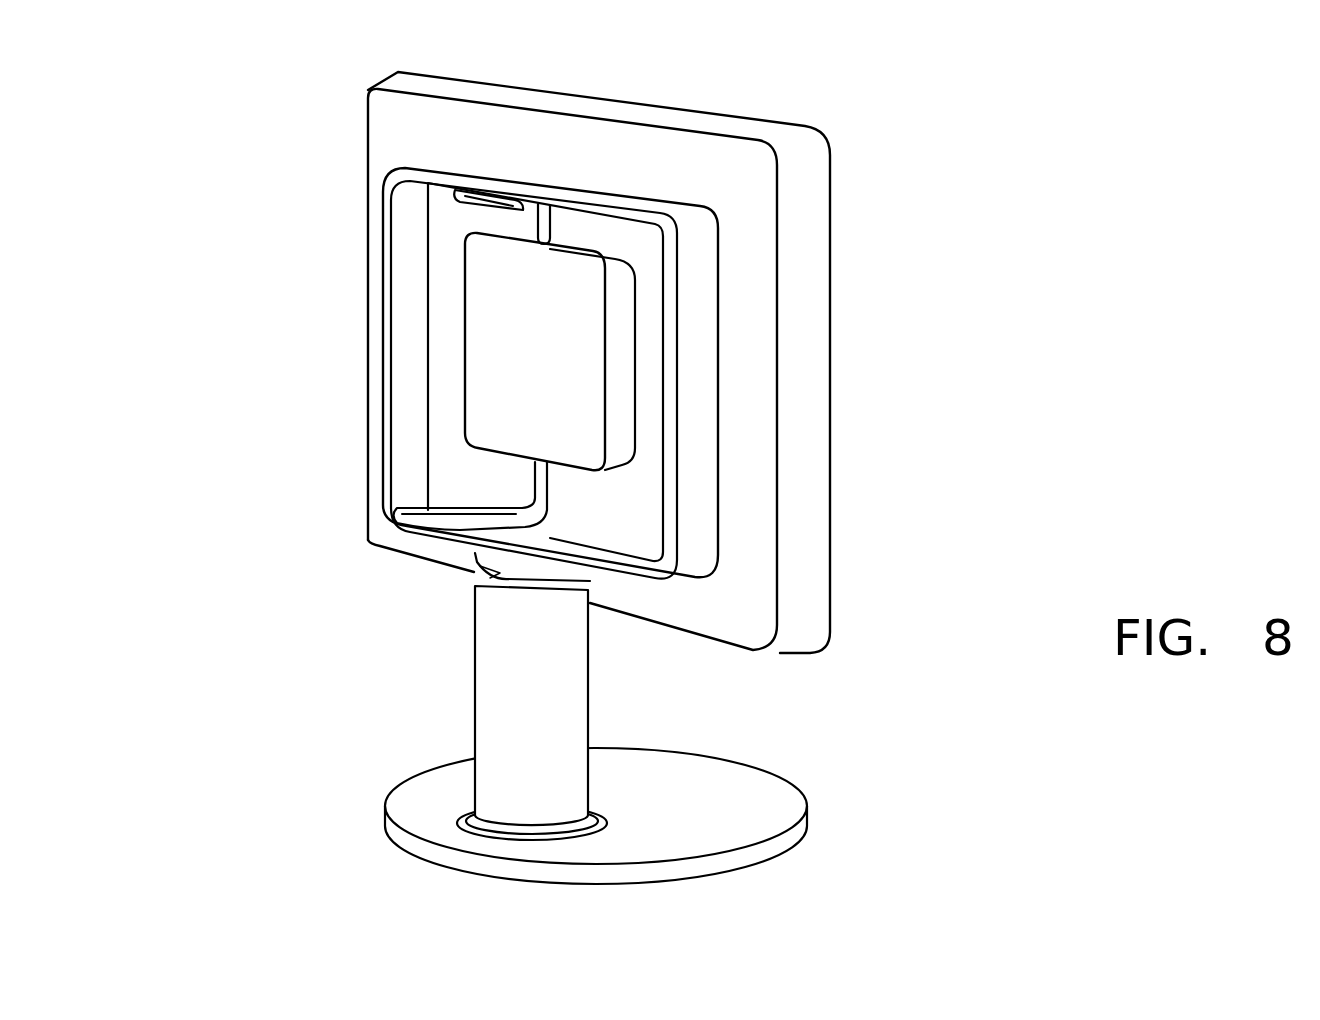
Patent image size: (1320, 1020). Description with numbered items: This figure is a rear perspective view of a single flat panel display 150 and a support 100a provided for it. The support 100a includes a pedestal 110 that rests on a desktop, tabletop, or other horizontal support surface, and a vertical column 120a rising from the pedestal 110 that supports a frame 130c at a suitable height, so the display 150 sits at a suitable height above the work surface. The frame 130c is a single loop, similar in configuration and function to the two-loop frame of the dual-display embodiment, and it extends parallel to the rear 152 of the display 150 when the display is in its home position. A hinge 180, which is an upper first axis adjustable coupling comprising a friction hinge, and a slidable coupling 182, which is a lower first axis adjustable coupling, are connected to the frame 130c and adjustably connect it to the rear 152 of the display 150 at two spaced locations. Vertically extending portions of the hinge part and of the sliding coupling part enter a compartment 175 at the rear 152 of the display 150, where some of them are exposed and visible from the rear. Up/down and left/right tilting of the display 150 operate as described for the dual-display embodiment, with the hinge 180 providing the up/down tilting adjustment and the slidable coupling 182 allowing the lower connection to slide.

The support 100a is at (511, 467).
The pedestal 110 is at (800, 808).
The vertical column 120a is at (568, 710).
The frame 130c is at (742, 265).
The flat panel display 150 is at (830, 141).
The rear 152 is at (720, 148).
The compartment 175 is at (552, 369).
The hinge 180 is at (462, 229).
The slidable coupling 182 is at (441, 488).